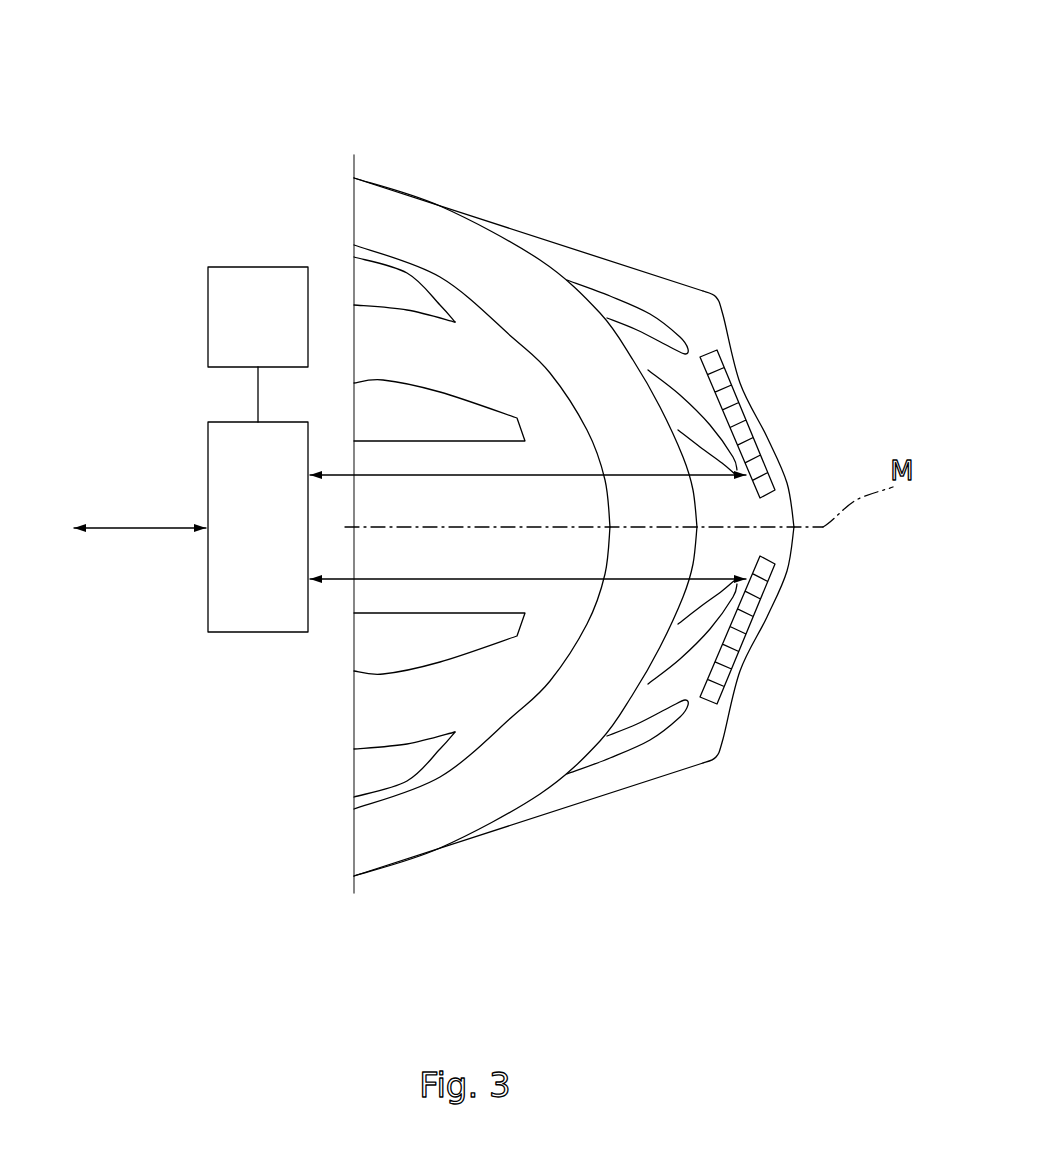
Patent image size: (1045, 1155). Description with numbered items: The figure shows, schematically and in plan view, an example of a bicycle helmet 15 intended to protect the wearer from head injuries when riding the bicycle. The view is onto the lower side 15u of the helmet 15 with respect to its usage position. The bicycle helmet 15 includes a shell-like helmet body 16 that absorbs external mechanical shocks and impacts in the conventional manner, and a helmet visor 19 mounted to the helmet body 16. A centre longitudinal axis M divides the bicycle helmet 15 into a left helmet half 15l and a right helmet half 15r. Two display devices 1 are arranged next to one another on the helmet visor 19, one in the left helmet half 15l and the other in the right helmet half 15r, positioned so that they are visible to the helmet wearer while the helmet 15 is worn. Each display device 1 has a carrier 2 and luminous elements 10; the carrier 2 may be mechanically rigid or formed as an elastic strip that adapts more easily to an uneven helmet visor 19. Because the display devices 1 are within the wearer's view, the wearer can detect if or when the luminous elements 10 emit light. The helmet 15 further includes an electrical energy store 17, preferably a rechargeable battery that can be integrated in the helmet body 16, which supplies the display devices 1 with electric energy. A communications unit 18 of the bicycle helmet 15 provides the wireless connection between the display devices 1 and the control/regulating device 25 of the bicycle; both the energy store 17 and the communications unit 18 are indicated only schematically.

The display device 1 is at (777, 525).
The carrier 2 is at (771, 525).
The luminous elements 10 is at (748, 448).
The bicycle helmet 15 is at (608, 493).
The right helmet half 15r is at (391, 182).
The lower side of the helmet 15u is at (471, 257).
The left helmet half 15l is at (392, 870).
The helmet body 16 is at (546, 258).
The electrical energy store 17 is at (245, 331).
The communications unit 18 is at (245, 546).
The helmet visor 19 is at (650, 271).
The control/regulating device 25 is at (37, 544).